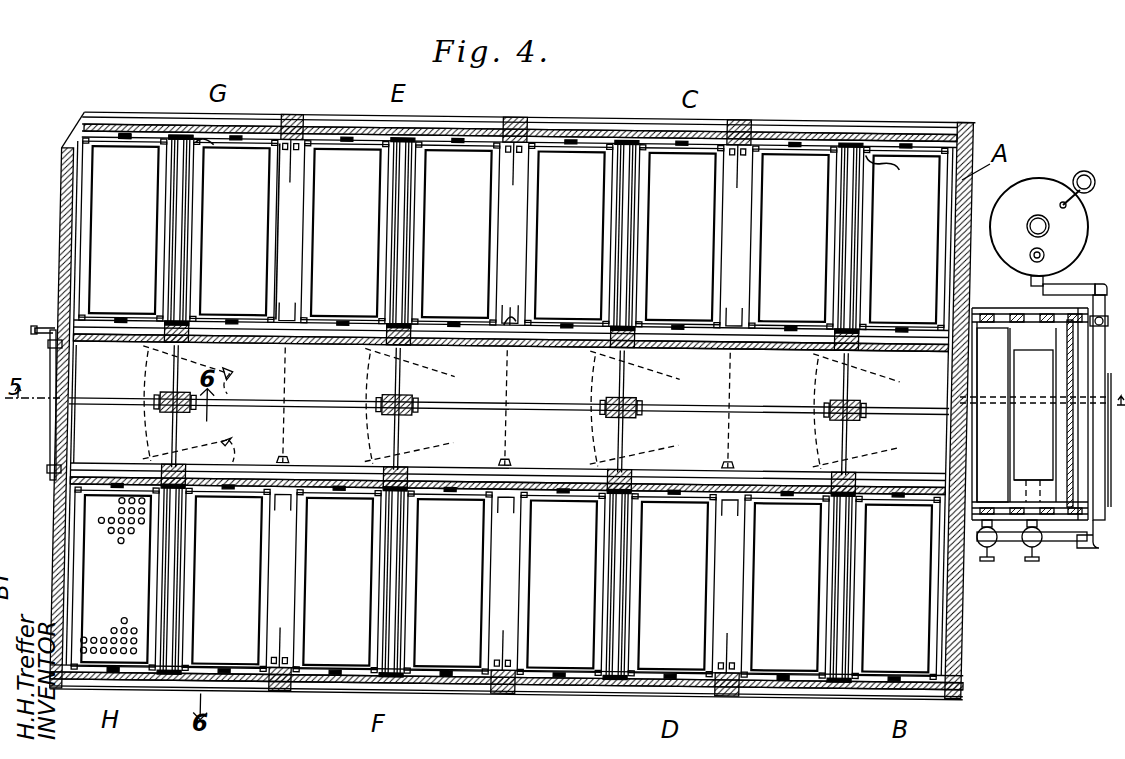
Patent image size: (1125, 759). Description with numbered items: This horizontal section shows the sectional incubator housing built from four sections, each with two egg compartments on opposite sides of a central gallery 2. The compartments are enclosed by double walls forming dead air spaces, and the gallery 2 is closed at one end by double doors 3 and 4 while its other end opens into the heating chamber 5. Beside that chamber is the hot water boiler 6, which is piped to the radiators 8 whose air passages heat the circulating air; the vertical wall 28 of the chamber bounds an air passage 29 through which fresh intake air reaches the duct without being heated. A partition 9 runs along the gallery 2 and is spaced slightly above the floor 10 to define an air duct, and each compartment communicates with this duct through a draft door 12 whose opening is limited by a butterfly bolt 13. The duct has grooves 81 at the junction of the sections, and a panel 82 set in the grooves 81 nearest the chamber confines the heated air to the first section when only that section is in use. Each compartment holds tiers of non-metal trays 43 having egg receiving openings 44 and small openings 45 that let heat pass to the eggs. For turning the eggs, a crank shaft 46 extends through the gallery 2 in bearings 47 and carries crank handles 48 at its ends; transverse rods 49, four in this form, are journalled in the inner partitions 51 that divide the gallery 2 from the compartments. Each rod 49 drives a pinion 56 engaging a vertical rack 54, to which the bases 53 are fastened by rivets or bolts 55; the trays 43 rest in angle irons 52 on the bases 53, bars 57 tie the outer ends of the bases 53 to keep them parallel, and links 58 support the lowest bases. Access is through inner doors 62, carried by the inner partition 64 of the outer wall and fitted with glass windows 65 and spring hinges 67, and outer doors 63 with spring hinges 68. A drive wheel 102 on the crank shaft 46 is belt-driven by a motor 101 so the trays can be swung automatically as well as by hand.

The gallery 2 is at (85, 456).
The double door 3 is at (82, 364).
The double door 4 is at (50, 432).
The heating chamber 5 is at (1026, 338).
The boiler 6 is at (1040, 180).
The radiator 8 is at (1020, 427).
The partition 9 is at (552, 497).
The floor 10 is at (75, 246).
The draft door 12 is at (165, 352).
The butterfly bolt 13 is at (240, 382).
The vertical wall 28 is at (1067, 465).
The air passage 29 is at (1062, 430).
The tray 43 is at (338, 226).
The egg receiving opening 44 is at (110, 636).
The small opening 45 is at (118, 530).
The crank shaft 46 is at (335, 404).
The bearing 47 is at (404, 394).
The crank handle 48 is at (36, 321).
The rod 49 is at (175, 238).
The inner partition 51 is at (542, 348).
The angle iron 52 is at (282, 275).
The base 53 is at (512, 314).
The rack 54 is at (181, 133).
The rivet or bolt 55 is at (886, 162).
The pinion 56 is at (212, 146).
The bar 57 is at (526, 314).
The link 58 is at (126, 133).
The door 62 is at (330, 124).
The door 63 is at (440, 117).
The inner partition 64 is at (292, 169).
The glass window 65 is at (360, 131).
The spring hinge 67 is at (550, 137).
The spring hinge 68 is at (292, 114).
The groove 81 is at (292, 382).
The panel 82 is at (738, 445).
The motor 101 is at (1088, 525).
The drive wheel 102 is at (1109, 295).